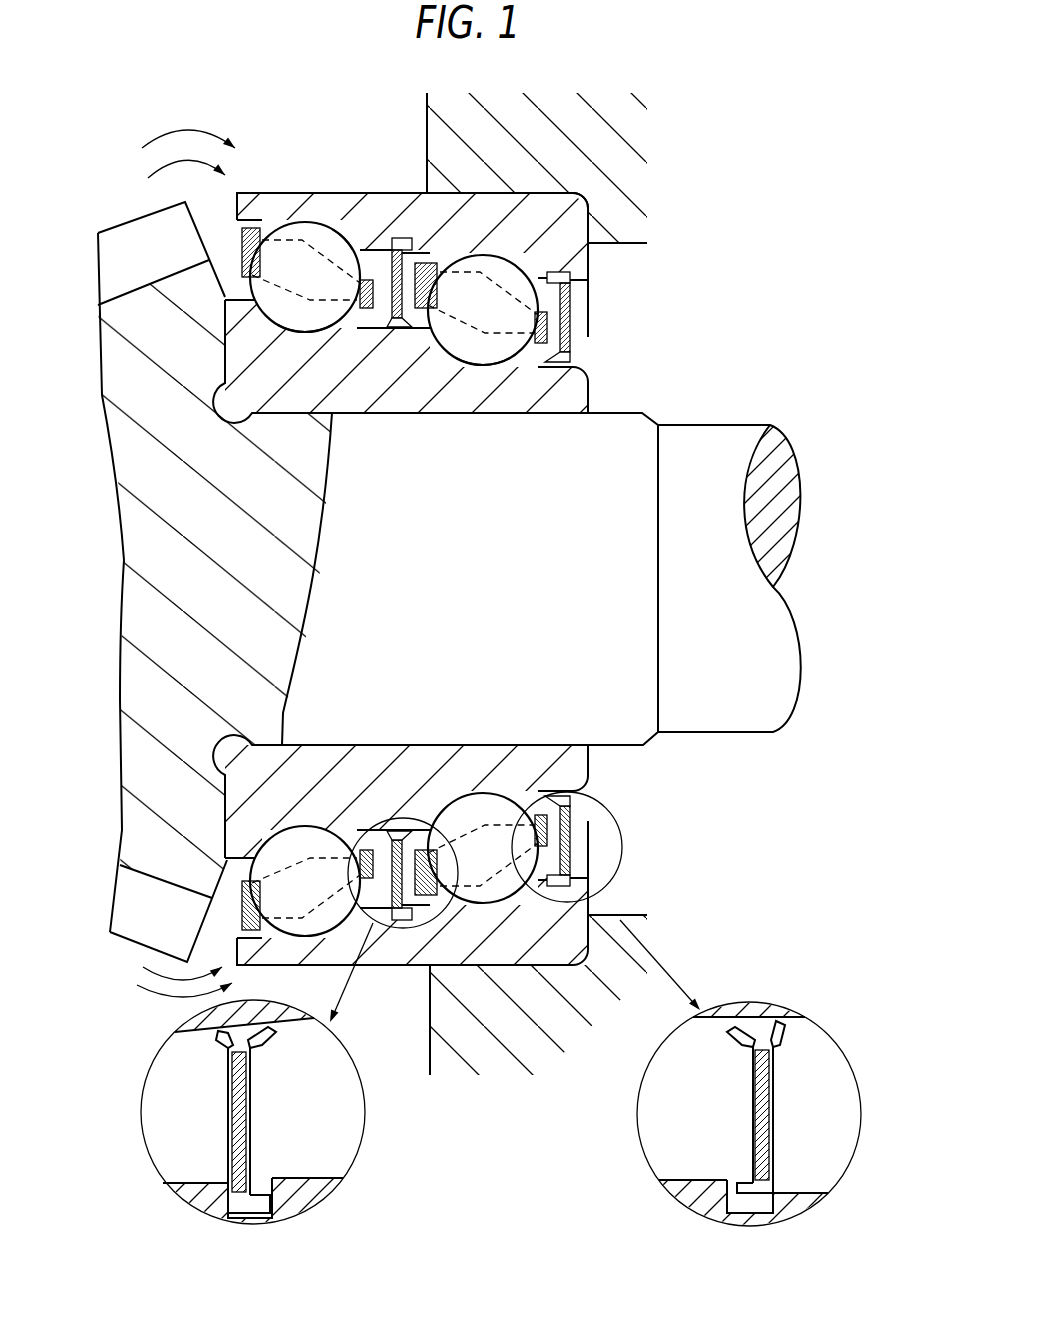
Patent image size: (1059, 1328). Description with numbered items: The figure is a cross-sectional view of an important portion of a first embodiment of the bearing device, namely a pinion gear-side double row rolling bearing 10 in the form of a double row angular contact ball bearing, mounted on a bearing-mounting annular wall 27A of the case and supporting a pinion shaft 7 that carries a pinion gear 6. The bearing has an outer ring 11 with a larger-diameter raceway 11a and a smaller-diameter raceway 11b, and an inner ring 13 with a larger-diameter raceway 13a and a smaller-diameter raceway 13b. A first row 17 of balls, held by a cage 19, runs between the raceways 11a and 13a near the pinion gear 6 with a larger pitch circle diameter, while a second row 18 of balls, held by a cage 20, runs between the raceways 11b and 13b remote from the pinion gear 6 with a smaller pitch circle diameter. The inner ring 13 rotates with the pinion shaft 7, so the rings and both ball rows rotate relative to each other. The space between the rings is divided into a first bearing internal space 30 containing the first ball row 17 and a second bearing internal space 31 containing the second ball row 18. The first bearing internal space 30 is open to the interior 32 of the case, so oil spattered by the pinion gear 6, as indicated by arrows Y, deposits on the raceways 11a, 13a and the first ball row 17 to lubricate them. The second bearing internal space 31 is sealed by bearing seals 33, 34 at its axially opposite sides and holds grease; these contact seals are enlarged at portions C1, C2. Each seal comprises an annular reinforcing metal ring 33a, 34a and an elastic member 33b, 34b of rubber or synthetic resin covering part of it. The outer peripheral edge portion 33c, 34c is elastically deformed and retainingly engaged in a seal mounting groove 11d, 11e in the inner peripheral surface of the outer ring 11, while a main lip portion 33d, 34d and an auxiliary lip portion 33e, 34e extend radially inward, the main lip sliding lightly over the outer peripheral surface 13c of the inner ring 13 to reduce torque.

The pinion gear 6 is at (148, 612).
The pinion shaft 7 is at (607, 708).
The double row rolling bearing 10 is at (690, 307).
The outer ring 11 is at (338, 207).
The larger-diameter raceway 11a is at (350, 243).
The smaller-diameter raceway 11b is at (575, 242).
The seal mounting groove 11d is at (243, 1217).
The seal mounting groove 11e is at (760, 1213).
The inner ring 13 is at (557, 393).
The larger-diameter raceway 13a is at (305, 331).
The smaller-diameter raceway 13b is at (490, 364).
The outer peripheral surface 13c is at (703, 1018).
The first row of balls 17 is at (302, 230).
The second row of balls 18 is at (478, 267).
The cage 19 is at (238, 243).
The cage 20 is at (572, 300).
The bearing-mounting annular wall 27A is at (563, 125).
The first bearing internal space 30 is at (377, 913).
The second bearing internal space 31 is at (600, 872).
The interior of the case 32 is at (88, 998).
The bearing seal 33 is at (403, 330).
The reinforcing metal ring 33a is at (242, 1102).
The elastic member 33b is at (227, 1112).
The outer peripheral edge portion 33c is at (227, 1203).
The main lip portion 33d is at (275, 1042).
The auxiliary lip portion 33e is at (220, 1043).
The bearing seal 34 is at (572, 322).
The reinforcing metal ring 34a is at (753, 1110).
The elastic member 34b is at (773, 1102).
The outer peripheral edge portion 34c is at (777, 1190).
The main lip portion 34d is at (737, 1035).
The auxiliary lip portion 34e is at (775, 1030).
The arrows Y is at (187, 128).
The enlarged portion C1 is at (365, 1112).
The enlarged portion C2 is at (637, 1120).